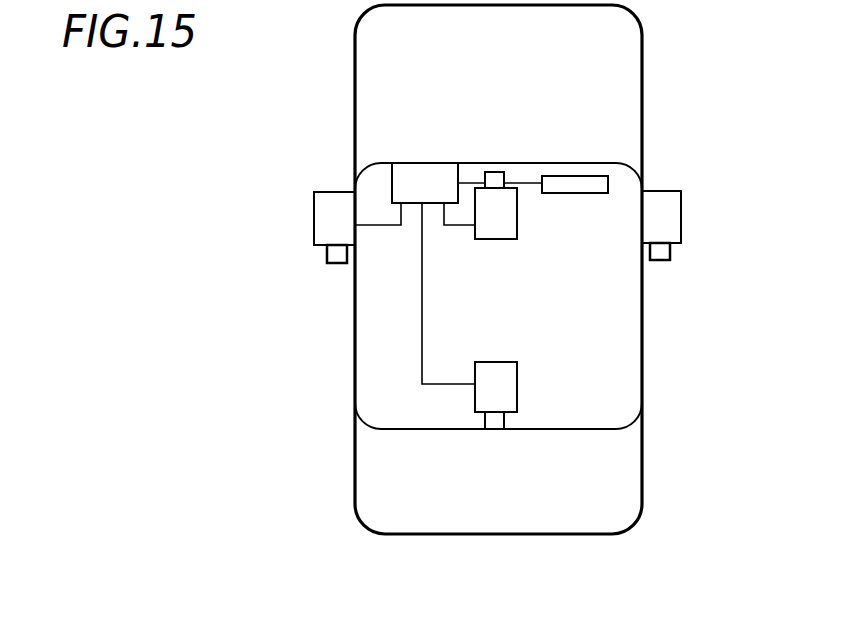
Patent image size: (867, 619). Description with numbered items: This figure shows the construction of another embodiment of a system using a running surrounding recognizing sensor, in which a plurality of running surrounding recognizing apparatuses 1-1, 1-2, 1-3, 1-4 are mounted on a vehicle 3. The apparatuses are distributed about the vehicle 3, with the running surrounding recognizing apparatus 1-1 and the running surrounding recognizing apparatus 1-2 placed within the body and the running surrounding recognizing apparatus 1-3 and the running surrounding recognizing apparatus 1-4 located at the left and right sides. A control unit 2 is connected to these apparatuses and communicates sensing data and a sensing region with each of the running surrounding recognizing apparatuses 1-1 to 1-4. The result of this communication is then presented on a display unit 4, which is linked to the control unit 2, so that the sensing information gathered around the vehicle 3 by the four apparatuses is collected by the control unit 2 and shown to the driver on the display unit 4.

The vehicle 3 is at (643, 129).
The control unit 2 is at (413, 176).
The display unit 4 is at (570, 176).
The running surrounding recognizing apparatus 1-1 is at (497, 239).
The running surrounding recognizing apparatus 1-2 is at (517, 385).
The running surrounding recognizing apparatus 1-3 is at (314, 214).
The running surrounding recognizing apparatus 1-4 is at (682, 214).